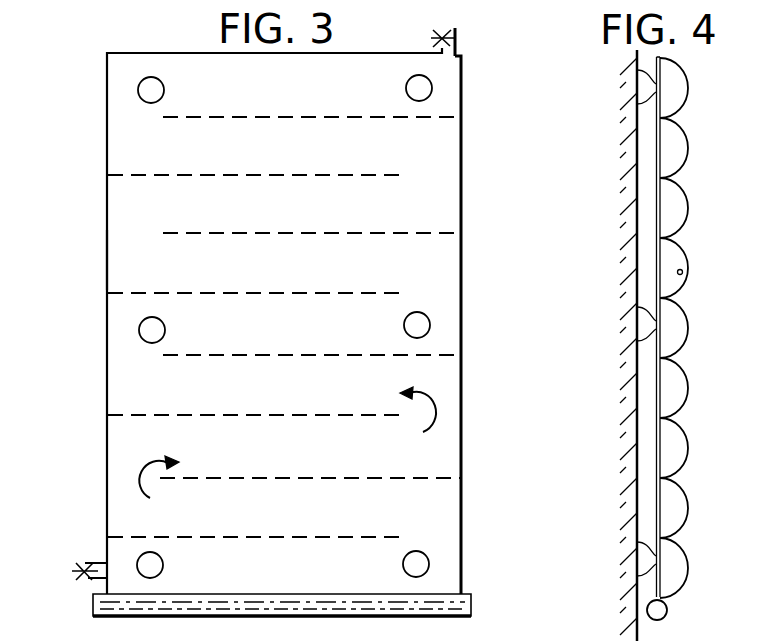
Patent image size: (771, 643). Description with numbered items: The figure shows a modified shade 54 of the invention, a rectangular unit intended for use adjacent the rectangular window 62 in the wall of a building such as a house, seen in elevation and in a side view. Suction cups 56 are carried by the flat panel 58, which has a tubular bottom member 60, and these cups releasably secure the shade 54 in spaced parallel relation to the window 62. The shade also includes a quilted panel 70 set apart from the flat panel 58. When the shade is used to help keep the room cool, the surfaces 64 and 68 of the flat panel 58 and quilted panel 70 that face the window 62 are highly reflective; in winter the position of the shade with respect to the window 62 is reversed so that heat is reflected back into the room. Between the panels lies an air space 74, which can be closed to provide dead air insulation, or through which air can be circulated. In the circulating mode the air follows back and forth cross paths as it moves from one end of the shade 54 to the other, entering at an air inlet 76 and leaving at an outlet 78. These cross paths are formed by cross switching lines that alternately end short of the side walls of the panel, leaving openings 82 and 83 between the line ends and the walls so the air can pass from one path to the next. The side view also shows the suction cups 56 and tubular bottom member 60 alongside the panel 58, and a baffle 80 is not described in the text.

In FIG. 3, the shade 54 is at (110, 314).
In FIG. 3, the suction cups 56 is at (152, 77).
In FIG. 4, the suction cups 56 is at (640, 86).
In FIG. 3, the flat panel 58 is at (118, 270).
In FIG. 4, the flat panel 58 is at (656, 374).
In FIG. 3, the tubular bottom member 60 is at (105, 616).
In FIG. 4, the tubular bottom member 60 is at (668, 613).
In FIG. 4, the window 62 is at (640, 162).
In FIG. 4, the surface 64 is at (640, 218).
In FIG. 4, the surface 68 is at (683, 272).
In FIG. 4, the quilted panel 70 is at (685, 333).
In FIG. 3, the air space 74 is at (127, 386).
In FIG. 4, the air space 74 is at (673, 393).
In FIG. 3, the air inlet 76 is at (76, 571).
In FIG. 3, the outlet 78 is at (458, 36).
In FIG. 3, the baffles 80 is at (138, 537).
In FIG. 3, the openings 82 is at (432, 531).
In FIG. 3, the openings 83 is at (125, 480).